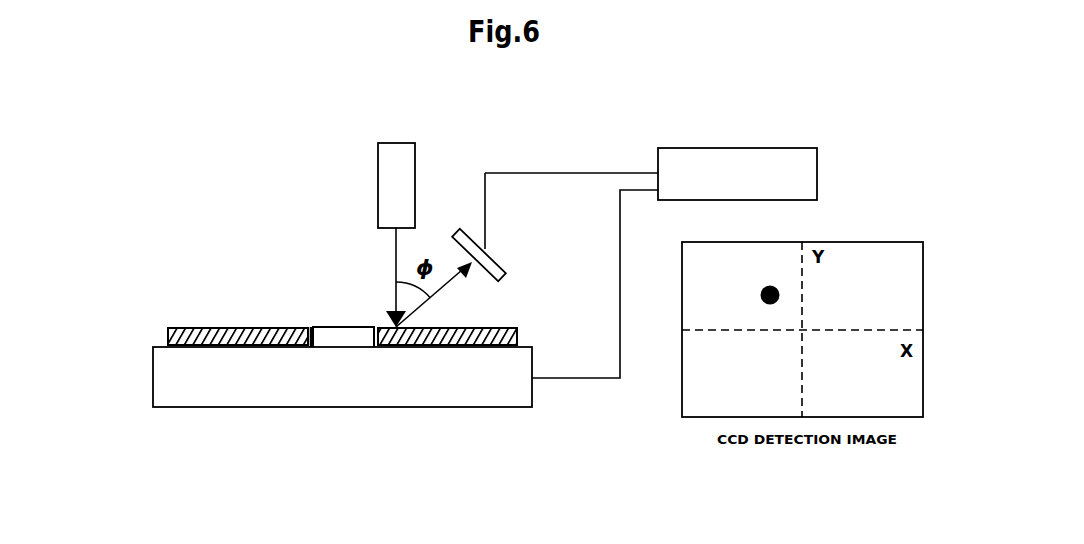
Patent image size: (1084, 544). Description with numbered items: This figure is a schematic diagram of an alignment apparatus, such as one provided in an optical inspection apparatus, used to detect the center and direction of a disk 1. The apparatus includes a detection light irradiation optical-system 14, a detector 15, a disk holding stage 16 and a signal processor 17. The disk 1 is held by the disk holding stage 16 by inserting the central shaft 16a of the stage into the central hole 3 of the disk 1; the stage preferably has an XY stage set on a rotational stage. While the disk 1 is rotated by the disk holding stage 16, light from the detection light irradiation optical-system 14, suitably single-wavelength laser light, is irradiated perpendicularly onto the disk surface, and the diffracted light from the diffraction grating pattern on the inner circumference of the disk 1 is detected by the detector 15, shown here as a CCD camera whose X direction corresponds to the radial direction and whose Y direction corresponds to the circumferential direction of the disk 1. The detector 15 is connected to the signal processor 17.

The disk 1 is at (252, 328).
The central hole 3 is at (310, 328).
The detection light irradiation optical-system 14 is at (378, 173).
The detector 15 is at (502, 277).
The disk holding stage 16 is at (153, 373).
The central shaft 16a is at (347, 327).
The signal processor 17 is at (817, 172).